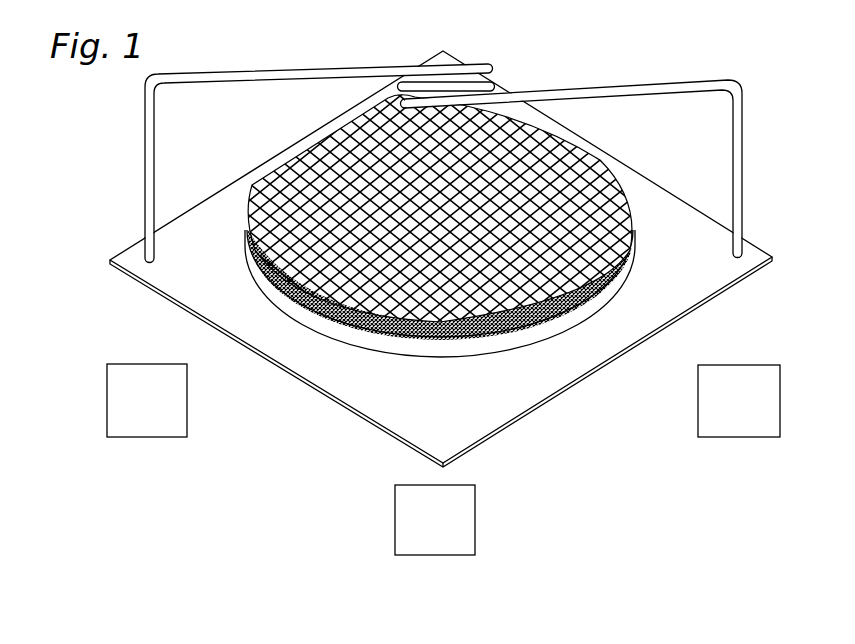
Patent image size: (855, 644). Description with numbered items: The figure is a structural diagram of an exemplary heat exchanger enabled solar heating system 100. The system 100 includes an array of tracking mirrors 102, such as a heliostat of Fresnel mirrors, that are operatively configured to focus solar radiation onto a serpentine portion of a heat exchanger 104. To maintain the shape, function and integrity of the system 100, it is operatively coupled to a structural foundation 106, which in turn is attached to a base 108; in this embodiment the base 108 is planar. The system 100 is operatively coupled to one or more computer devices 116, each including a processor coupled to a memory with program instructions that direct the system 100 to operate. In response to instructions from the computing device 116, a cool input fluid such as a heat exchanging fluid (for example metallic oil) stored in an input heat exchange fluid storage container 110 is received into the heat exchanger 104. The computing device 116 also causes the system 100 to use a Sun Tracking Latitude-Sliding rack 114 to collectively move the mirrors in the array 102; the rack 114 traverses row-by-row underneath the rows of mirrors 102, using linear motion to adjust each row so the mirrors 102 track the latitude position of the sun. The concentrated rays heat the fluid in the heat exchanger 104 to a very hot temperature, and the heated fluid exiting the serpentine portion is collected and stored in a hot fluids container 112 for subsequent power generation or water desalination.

The solar system 100 is at (757, 39).
The array of tracking mirrors 102 is at (368, 145).
The heat exchanger 104 is at (445, 88).
The structural foundation 106 is at (392, 353).
The base 108 is at (193, 237).
The input heat exchange fluid storage/container 110 is at (147, 400).
The hot fluids container 112 is at (739, 401).
The Sun Tracking Latitude-Sliding (STLS) rack 114 is at (583, 308).
The computer device 116 is at (435, 520).